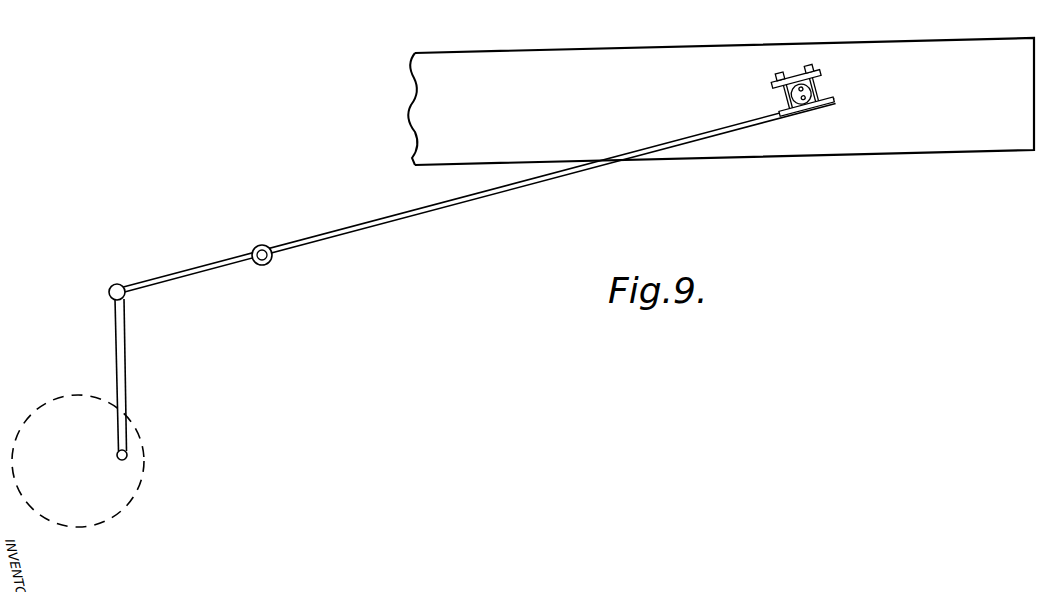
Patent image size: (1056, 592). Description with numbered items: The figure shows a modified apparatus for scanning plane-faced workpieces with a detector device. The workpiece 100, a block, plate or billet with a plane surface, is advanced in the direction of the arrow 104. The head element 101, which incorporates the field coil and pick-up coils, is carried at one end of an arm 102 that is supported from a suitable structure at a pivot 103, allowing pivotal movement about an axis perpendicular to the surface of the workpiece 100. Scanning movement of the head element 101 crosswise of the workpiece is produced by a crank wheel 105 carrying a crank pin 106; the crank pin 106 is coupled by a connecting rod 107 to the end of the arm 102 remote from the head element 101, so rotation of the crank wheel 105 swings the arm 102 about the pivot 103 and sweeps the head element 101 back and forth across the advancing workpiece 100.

The workpiece 100 is at (948, 142).
The head element 101 is at (818, 79).
The arm 102 is at (361, 228).
The pivot 103 is at (270, 246).
The arrow 104 is at (365, 103).
The crank wheel 105 is at (147, 451).
The crank pin 106 is at (128, 450).
The connecting rod 107 is at (117, 342).